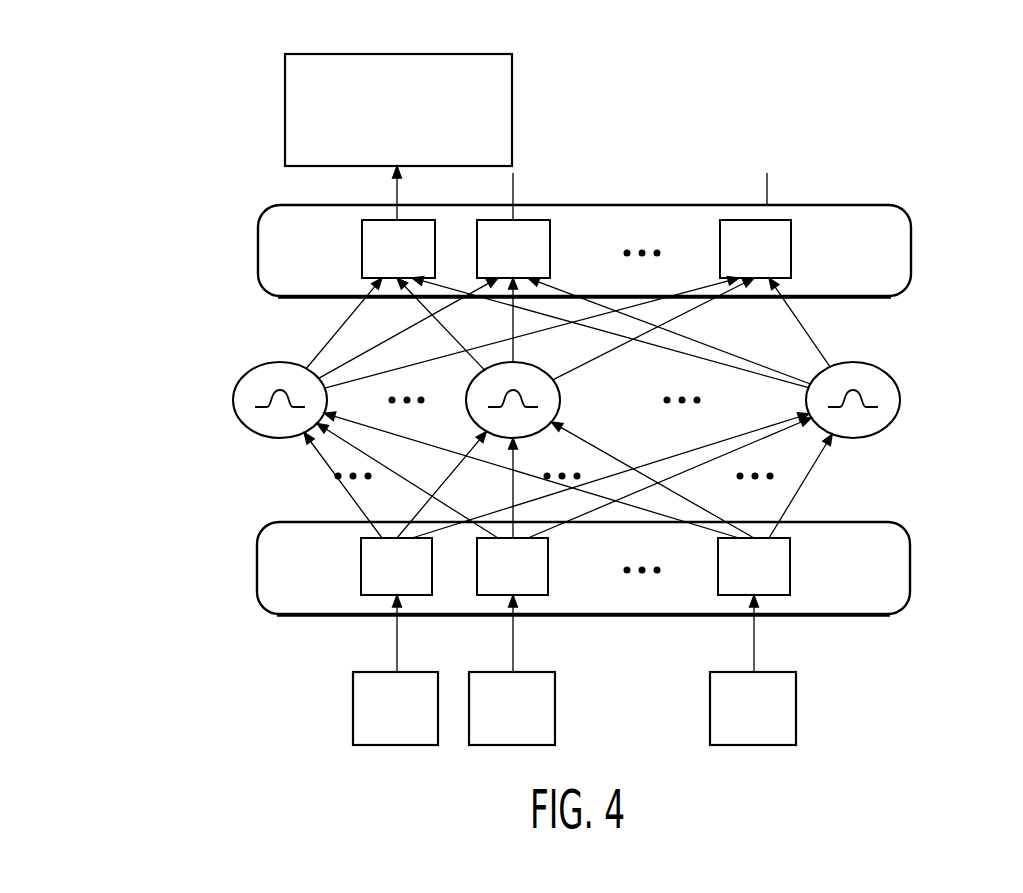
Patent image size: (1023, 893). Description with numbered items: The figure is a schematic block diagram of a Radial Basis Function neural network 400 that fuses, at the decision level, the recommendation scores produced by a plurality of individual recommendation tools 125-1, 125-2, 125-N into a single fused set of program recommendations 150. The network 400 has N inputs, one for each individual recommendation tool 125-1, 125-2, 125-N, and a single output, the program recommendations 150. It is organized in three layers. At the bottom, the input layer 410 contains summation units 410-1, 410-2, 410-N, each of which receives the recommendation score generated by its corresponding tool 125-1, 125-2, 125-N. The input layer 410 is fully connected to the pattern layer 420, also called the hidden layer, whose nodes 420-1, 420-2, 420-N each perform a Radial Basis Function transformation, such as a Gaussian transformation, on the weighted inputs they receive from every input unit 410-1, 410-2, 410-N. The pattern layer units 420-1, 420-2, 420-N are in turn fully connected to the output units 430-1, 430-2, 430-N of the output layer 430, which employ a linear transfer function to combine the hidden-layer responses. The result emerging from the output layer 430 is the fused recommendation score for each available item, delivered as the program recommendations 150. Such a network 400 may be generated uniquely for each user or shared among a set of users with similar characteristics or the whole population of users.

The Radial Basis Function neural network 400 is at (103, 124).
The program recommendations 150 is at (415, 150).
The output layer 430 is at (258, 232).
The output unit 430-1 is at (362, 250).
The output unit 430-2 is at (550, 240).
The output unit 430-N is at (791, 258).
The pattern layer 420 is at (107, 422).
The pattern layer node 420-1 is at (238, 384).
The pattern layer node 420-2 is at (559, 390).
The pattern layer node 420-N is at (893, 375).
The input layer 410 is at (258, 550).
The input layer unit 410-1 is at (361, 565).
The input layer unit 410-2 is at (548, 560).
The input layer unit 410-N is at (790, 578).
The individual recommendation tool 125-1 is at (422, 734).
The individual recommendation tool 125-2 is at (538, 734).
The individual recommendation tool 125-N is at (781, 734).